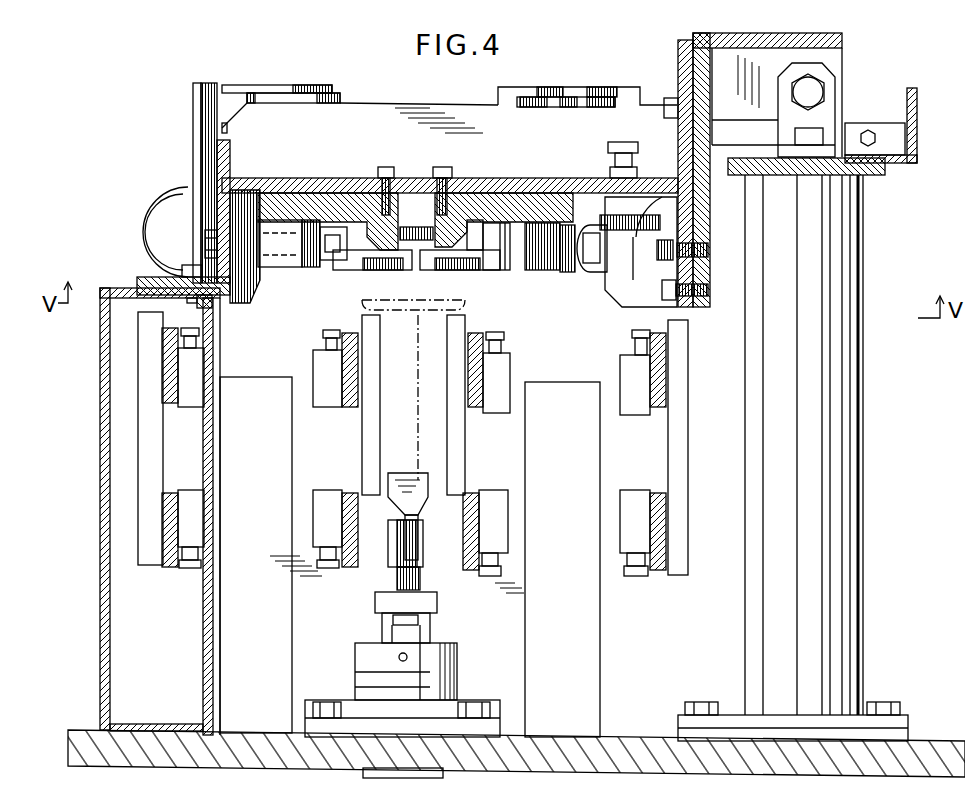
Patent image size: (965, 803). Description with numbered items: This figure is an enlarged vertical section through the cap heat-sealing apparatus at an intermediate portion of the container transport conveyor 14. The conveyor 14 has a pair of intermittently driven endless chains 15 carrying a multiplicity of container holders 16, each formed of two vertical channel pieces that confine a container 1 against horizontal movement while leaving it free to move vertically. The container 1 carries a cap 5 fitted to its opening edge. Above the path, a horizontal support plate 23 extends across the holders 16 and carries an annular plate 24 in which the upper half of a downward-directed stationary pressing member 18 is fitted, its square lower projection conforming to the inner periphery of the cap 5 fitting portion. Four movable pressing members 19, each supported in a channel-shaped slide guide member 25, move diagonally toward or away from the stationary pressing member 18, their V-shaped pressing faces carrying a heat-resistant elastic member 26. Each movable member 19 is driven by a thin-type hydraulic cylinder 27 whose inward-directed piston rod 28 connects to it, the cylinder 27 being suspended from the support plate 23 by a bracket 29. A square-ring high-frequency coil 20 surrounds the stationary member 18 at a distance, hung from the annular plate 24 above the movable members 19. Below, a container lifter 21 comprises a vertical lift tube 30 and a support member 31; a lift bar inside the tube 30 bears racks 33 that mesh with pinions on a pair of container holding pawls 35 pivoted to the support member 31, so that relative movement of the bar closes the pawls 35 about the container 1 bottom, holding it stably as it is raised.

The container 1 is at (365, 447).
The cap 5 is at (417, 313).
The container transport conveyor 14 is at (700, 433).
The endless chains 15 is at (328, 347).
The container holder 16 is at (360, 567).
The stationary pressing member 18 is at (386, 270).
The movable pressing member 19 is at (318, 267).
The high-frequency coil 20 is at (483, 198).
The container lifter 21 is at (493, 668).
The horizontal support plate 23 is at (555, 190).
The annular plate 24 is at (303, 210).
The slide guide member 25 is at (280, 268).
The elastic member 26 is at (338, 262).
The hydraulic cylinder 27 is at (157, 228).
The piston rod 28 is at (612, 268).
The bracket 29 is at (238, 300).
The lift tube 30 is at (432, 627).
The support member 31 is at (392, 578).
The rack 33 is at (420, 580).
The container holding pawl 35 is at (413, 487).